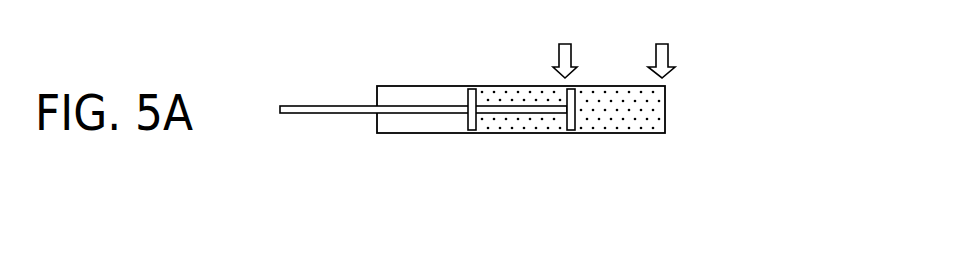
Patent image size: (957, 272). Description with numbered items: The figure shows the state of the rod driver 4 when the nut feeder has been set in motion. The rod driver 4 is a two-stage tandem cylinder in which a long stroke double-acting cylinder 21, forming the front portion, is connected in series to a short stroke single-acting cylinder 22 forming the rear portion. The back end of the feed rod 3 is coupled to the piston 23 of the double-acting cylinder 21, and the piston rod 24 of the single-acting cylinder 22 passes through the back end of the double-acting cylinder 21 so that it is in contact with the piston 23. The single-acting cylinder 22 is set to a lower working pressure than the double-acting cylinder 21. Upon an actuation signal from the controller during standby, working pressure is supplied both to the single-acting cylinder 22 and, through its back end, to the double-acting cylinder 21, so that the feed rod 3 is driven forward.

The feed rod 3 is at (338, 106).
The rod driver 4 is at (693, 88).
The double-acting cylinder 21 is at (425, 135).
The single-acting cylinder 22 is at (630, 135).
The piston 23 is at (468, 95).
The piston rod 24 is at (522, 103).